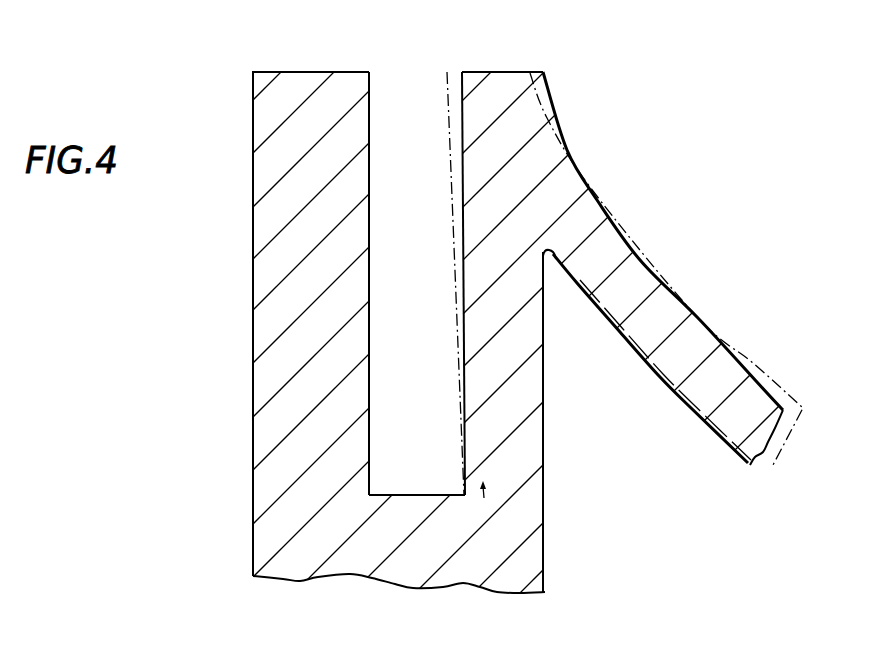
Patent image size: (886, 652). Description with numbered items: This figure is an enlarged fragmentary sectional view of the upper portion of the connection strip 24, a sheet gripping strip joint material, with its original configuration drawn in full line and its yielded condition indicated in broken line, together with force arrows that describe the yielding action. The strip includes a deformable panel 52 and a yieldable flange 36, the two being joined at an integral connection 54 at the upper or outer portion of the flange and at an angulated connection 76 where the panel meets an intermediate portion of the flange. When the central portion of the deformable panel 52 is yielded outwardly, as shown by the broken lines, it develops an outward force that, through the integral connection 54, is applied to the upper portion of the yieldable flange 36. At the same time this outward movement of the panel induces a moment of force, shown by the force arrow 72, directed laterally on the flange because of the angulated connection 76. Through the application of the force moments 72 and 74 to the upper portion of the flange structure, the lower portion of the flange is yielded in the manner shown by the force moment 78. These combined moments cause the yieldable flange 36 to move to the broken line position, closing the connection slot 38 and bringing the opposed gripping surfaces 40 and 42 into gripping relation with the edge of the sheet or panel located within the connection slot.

The connection strip 24 is at (234, 64).
The yieldable flange 36 is at (544, 369).
The connection slot 38 is at (409, 100).
The gripping surface 40 is at (376, 380).
The gripping surface 42 is at (449, 189).
The deformable panel 52 is at (682, 340).
The integral connection 54 is at (580, 130).
The force arrow 72 is at (523, 95).
The force moment 74 is at (529, 217).
The angulated connection 76 is at (548, 263).
The force moment 78 is at (466, 517).